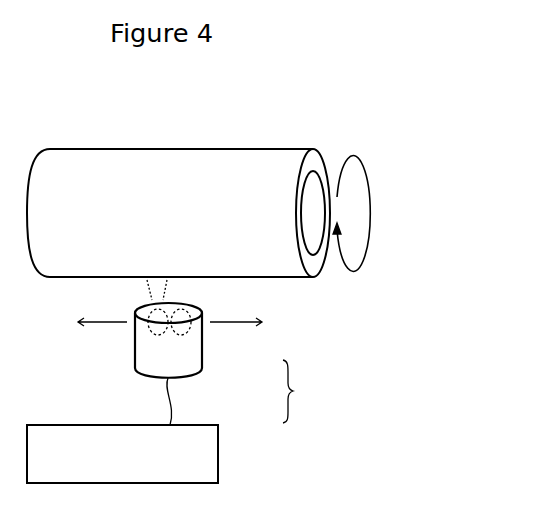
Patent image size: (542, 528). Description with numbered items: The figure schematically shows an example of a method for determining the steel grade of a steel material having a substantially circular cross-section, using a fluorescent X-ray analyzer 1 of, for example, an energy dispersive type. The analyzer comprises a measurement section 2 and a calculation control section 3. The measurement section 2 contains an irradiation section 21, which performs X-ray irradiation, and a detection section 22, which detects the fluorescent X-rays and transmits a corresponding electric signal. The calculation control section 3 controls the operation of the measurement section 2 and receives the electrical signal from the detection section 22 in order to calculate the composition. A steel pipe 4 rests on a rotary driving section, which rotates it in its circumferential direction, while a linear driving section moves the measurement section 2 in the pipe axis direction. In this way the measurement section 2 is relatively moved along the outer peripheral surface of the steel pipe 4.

The fluorescent X-ray analyzer 1 is at (297, 391).
The measurement section 2 is at (190, 350).
The calculation control section 3 is at (211, 446).
The steel pipe 4 is at (235, 161).
The irradiation section 21 is at (147, 333).
The detection section 22 is at (172, 337).